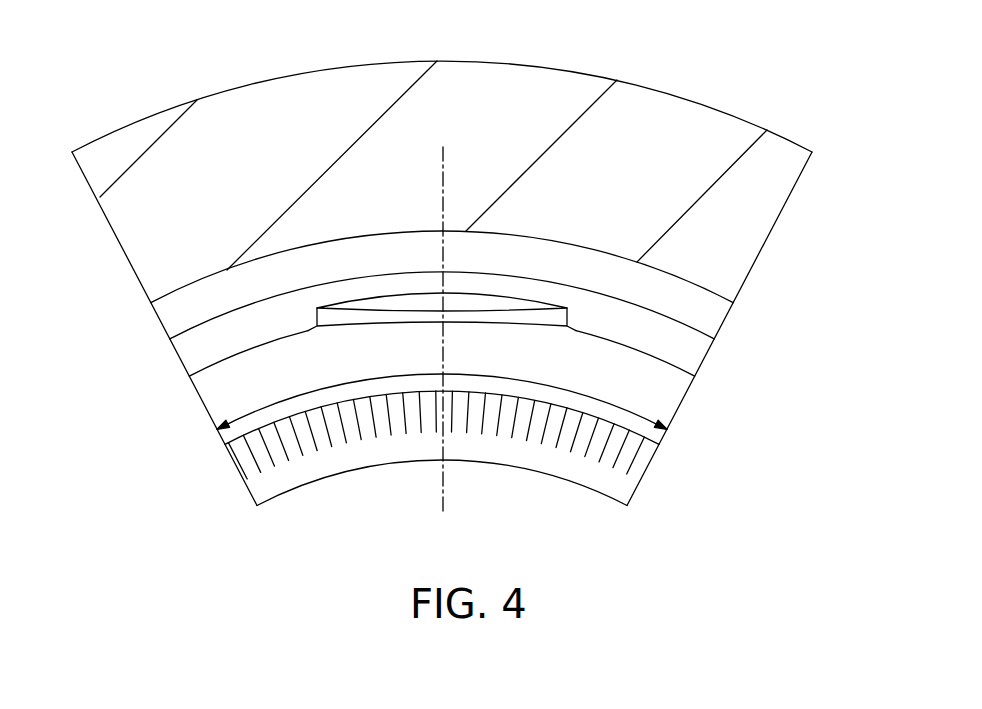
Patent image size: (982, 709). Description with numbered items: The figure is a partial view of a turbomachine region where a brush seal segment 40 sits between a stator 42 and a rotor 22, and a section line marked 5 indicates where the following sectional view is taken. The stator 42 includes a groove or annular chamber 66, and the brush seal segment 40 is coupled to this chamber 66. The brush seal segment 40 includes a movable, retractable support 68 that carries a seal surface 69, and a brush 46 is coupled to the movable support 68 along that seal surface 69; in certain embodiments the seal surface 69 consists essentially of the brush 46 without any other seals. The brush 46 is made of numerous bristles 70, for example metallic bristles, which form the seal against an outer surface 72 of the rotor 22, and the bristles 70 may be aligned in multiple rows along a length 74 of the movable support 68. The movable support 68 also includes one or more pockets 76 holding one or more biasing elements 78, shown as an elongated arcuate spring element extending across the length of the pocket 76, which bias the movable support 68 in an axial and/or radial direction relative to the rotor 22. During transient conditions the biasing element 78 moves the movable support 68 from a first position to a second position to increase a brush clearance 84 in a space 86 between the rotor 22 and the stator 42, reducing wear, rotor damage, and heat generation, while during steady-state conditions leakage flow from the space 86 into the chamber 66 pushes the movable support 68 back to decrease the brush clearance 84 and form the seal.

The rotor 22 is at (273, 512).
The brush seal segment 40 is at (185, 393).
The stator 42 is at (695, 112).
The brush 46 is at (643, 458).
The chamber 66 is at (708, 320).
The movable support 68 is at (684, 397).
The seal surface 69 is at (266, 466).
The bristles 70 is at (589, 447).
The outer surface 72 is at (287, 496).
The length 74 is at (323, 390).
The pocket 76 is at (507, 300).
The biasing element 78 is at (480, 322).
The brush clearance 84 is at (247, 461).
The space 86 is at (290, 473).
The section line 5- 5 is at (494, 515).